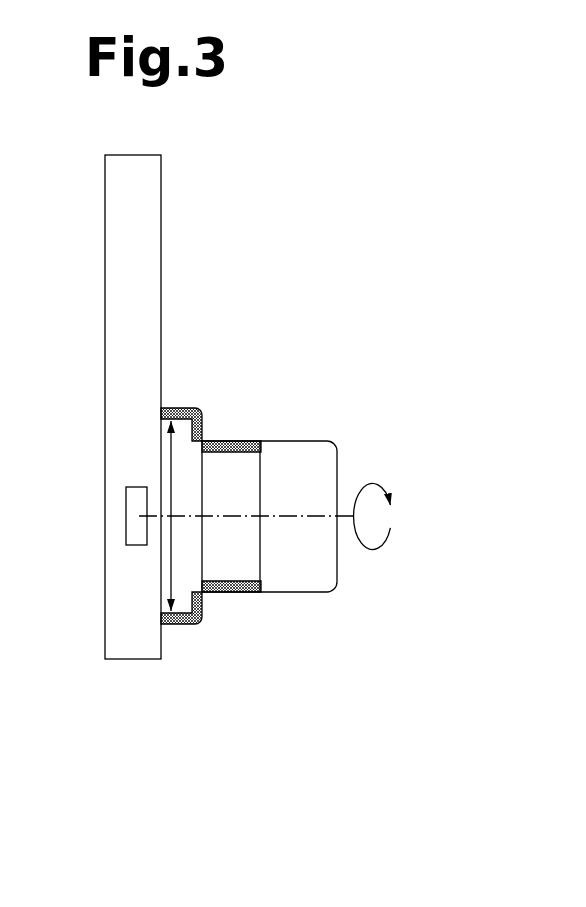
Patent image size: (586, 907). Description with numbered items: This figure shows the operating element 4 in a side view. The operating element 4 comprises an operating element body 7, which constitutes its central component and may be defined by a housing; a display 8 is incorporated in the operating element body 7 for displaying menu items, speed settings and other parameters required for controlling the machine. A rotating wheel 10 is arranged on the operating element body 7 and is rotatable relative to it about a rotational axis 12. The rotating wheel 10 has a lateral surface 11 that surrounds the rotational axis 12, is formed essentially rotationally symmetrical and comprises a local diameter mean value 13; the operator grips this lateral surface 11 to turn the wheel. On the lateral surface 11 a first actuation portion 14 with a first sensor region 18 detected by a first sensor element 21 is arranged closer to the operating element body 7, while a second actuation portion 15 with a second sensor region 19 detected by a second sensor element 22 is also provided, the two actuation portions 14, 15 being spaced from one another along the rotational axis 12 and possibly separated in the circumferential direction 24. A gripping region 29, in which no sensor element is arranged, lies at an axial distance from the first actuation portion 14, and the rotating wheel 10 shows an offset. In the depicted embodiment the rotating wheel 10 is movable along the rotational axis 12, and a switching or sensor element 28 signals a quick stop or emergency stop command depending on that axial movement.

The operating element 4 is at (195, 141).
The operating element body 7 is at (139, 177).
The display 8 is at (180, 237).
The rotating wheel 10 is at (307, 343).
The lateral surface 11 is at (317, 397).
The rotational axis 12 is at (181, 515).
The local diameter mean value 13 is at (172, 492).
The first actuation portion 14 is at (233, 587).
The first sensor region 18 is at (223, 602).
The second actuation portion 15 is at (192, 699).
The second sensor region 19 is at (198, 630).
The first sensor element 21 is at (238, 598).
The second sensor element 22 is at (179, 625).
The circumferential direction 24 is at (381, 558).
The switching or sensor element 28 is at (131, 495).
The gripping region 29 is at (307, 602).